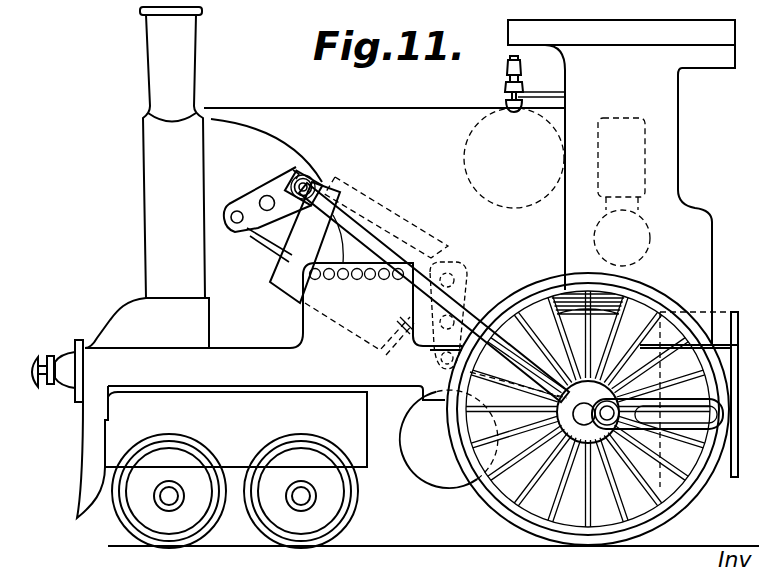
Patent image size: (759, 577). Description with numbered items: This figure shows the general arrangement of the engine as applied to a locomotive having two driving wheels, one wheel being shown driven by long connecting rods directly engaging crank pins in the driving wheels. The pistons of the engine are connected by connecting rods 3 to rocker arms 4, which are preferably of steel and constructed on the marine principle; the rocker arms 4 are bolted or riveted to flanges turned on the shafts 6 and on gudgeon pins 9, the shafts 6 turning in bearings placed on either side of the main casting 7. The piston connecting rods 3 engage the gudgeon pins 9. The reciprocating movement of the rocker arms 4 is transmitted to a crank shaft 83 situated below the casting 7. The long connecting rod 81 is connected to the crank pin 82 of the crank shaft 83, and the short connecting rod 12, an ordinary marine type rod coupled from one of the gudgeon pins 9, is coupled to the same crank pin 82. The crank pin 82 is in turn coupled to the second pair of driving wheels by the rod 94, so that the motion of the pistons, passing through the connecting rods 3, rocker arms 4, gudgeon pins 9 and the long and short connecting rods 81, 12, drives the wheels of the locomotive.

The connecting rod 3 is at (260, 238).
The rocker arm 4 is at (253, 196).
The shaft 6 is at (270, 196).
The main casting 7 is at (462, 246).
The gudgeon pin 9 is at (237, 211).
The short connecting rod 12 is at (472, 389).
The long connecting rod 81 is at (383, 243).
The crank pin 82 is at (607, 426).
The crank shaft 83 is at (581, 421).
The rod 94 is at (692, 418).